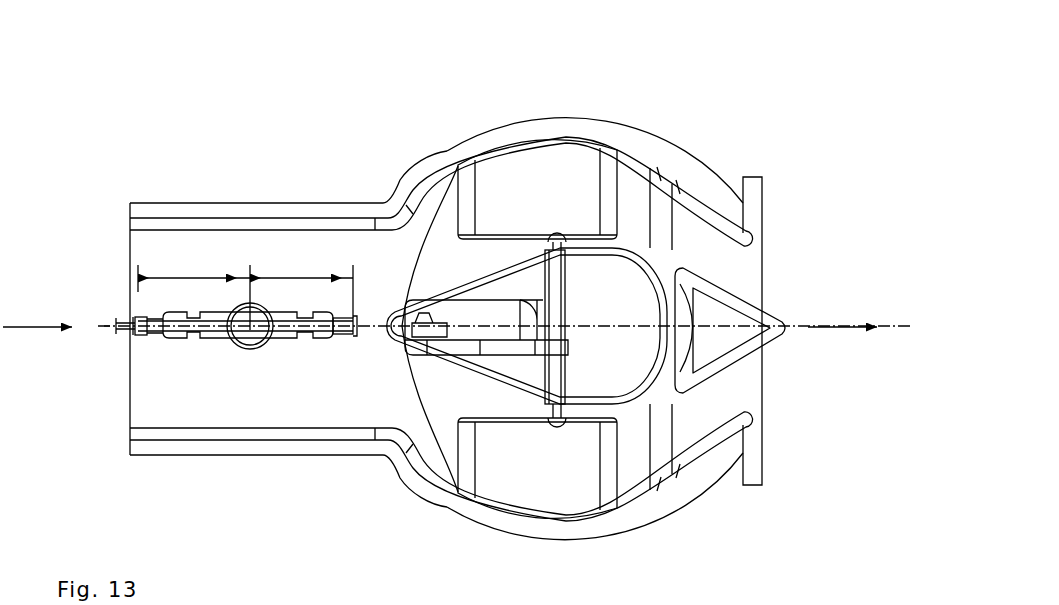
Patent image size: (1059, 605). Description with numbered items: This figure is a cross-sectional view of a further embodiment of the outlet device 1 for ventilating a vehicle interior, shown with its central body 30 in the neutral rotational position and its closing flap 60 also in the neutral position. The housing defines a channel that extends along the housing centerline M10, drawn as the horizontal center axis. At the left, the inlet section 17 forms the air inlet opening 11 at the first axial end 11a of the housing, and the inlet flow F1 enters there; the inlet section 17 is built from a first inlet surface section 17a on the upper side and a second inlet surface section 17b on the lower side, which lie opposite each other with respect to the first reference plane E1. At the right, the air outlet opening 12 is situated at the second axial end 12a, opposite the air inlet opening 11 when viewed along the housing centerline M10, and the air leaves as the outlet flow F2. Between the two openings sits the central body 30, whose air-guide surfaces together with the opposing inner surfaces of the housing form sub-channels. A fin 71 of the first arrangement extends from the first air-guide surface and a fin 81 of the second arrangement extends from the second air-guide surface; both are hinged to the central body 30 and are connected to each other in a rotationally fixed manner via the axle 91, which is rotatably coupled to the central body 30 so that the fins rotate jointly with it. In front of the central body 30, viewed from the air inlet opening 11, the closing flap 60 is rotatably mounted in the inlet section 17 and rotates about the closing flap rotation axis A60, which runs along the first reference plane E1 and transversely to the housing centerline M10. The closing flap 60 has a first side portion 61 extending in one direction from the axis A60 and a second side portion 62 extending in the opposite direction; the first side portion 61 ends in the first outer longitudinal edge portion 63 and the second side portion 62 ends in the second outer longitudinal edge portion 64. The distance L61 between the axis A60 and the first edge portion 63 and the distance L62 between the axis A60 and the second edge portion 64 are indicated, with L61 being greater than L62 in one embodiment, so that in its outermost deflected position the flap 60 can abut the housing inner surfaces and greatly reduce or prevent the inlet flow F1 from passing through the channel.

The outlet device 1 is at (210, 152).
The air inlet opening 11 is at (136, 245).
The first axial end 11a is at (130, 214).
The air outlet opening 12 is at (777, 268).
The second axial end 12a is at (766, 213).
The inlet section 17 is at (223, 242).
The first inlet surface section 17a is at (262, 226).
The second inlet surface section 17b is at (242, 427).
The central body 30 is at (636, 213).
The closing flap 60 is at (207, 358).
The first side portion 61 is at (143, 339).
The second side portion 62 is at (352, 329).
The first outer longitudinal edge portion 63 is at (132, 313).
The second outer longitudinal edge portion 64 is at (360, 323).
The fin of the first arrangement 71 is at (540, 128).
The fin of the second arrangement 81 is at (548, 520).
The axle 91 is at (581, 316).
The closing flap rotation axis A60 is at (250, 332).
The housing centerline M10 is at (118, 322).
The distance L61 is at (207, 276).
The distance L62 is at (288, 276).
The first reference plane E1 is at (106, 328).
The inlet flow F1 is at (37, 313).
The outflow direction F2 is at (842, 313).